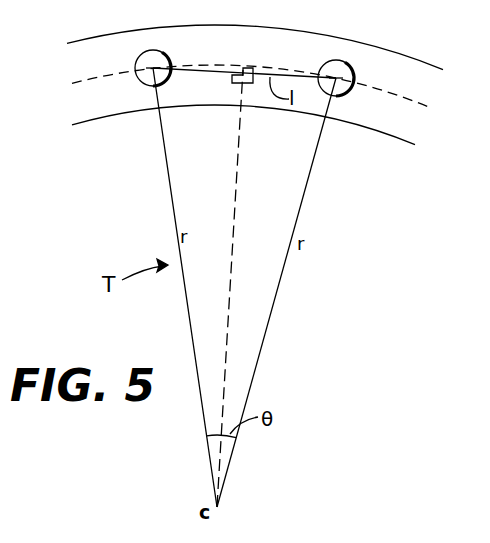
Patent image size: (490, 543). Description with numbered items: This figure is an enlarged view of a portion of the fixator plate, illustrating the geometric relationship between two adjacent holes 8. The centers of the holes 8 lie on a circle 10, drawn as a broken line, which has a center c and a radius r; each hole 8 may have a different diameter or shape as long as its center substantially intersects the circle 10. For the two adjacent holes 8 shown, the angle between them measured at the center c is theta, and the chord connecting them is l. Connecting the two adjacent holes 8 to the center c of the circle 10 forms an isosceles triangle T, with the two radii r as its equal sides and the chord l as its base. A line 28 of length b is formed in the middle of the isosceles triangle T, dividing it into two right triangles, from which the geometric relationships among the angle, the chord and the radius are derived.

The holes 8 is at (145, 62).
The circle 10 is at (380, 90).
The line 28 is at (253, 293).